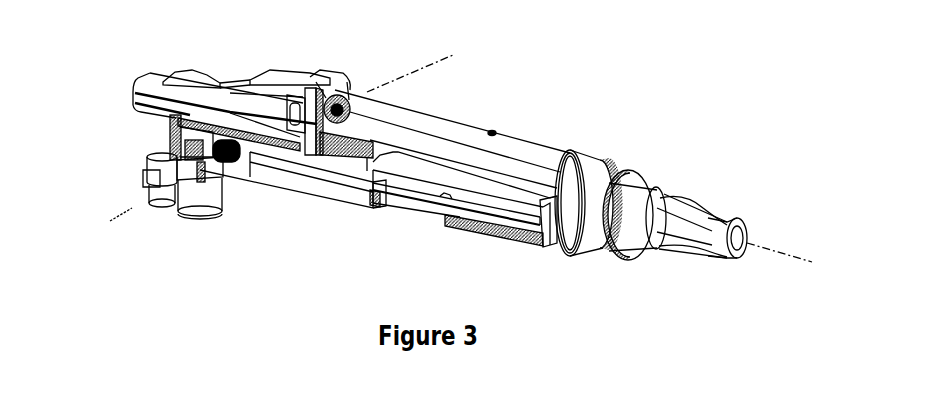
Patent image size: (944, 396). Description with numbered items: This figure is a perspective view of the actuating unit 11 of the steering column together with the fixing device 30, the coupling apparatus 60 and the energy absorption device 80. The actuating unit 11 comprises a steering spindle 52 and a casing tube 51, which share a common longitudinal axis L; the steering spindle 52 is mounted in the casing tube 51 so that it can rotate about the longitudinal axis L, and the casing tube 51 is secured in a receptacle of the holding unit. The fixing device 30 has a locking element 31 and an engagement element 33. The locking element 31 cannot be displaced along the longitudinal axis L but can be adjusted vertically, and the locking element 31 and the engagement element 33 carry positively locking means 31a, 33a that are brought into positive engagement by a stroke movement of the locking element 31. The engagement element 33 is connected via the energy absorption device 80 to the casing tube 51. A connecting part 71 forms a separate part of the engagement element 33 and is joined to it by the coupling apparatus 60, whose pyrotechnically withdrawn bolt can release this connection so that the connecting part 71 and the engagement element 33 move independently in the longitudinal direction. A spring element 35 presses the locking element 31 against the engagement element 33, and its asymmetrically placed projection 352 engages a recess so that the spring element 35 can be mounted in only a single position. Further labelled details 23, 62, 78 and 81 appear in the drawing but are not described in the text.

The actuating unit 11 is at (510, 147).
The pivot 23 is at (340, 95).
The fixing device 30 is at (374, 62).
The locking element 31 is at (270, 73).
The positively locking means 31a is at (284, 143).
The engagement element 33 is at (333, 178).
The positively locking means 33a is at (205, 163).
The spring element 35 is at (185, 72).
The projection 352 is at (165, 78).
The casing tube 51 is at (481, 130).
The steering spindle 52 is at (640, 203).
The coupling apparatus 60 is at (158, 215).
The knob 62 is at (200, 222).
The connecting part 71 is at (195, 138).
The nut 78 is at (145, 185).
The energy absorption device 80 is at (456, 235).
The slot 81 is at (405, 210).
The longitudinal axis L is at (792, 252).